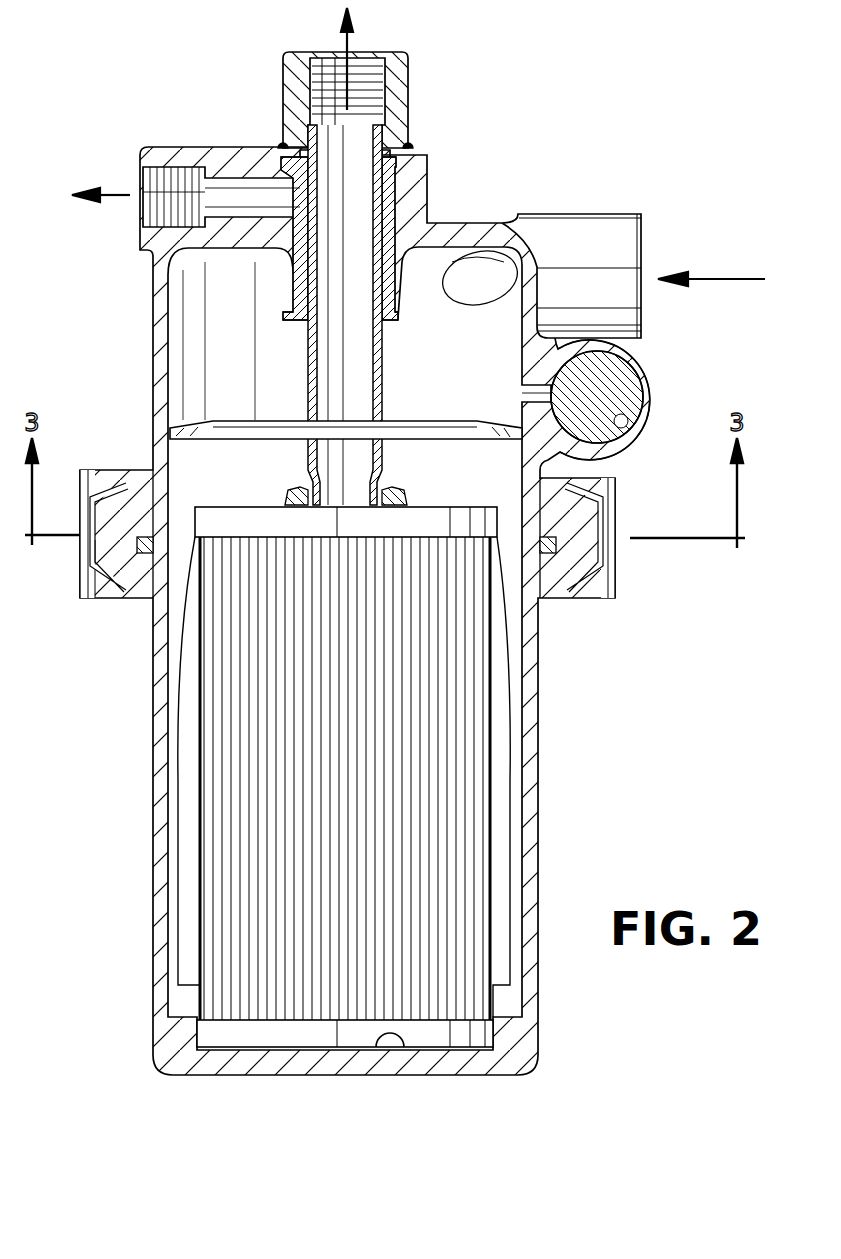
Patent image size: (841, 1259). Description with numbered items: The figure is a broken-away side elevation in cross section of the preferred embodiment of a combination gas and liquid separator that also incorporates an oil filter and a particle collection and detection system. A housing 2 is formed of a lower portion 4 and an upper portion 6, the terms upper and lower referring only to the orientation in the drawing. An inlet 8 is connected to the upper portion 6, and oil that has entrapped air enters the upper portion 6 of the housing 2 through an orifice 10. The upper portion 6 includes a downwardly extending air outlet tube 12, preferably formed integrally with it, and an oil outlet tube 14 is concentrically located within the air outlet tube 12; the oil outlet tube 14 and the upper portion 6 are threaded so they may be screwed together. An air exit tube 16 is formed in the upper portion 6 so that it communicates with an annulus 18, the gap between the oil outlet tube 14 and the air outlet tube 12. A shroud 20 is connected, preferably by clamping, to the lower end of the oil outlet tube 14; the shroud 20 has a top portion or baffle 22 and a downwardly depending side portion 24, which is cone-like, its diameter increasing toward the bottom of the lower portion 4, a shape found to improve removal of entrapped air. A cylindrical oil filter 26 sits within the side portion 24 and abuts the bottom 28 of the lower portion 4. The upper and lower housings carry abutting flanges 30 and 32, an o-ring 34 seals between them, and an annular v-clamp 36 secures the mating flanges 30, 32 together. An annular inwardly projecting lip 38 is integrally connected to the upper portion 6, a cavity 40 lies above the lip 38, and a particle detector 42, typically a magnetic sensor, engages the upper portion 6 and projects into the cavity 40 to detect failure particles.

The housing 2 is at (365, 611).
The lower portion 4 is at (365, 611).
The upper portion 6 is at (153, 383).
The inlet 8 is at (643, 250).
The orifice 10 is at (486, 288).
The air outlet tube 12 is at (400, 292).
The oil outlet tube 14 is at (395, 95).
The air exit tube 16 is at (160, 190).
The annulus 18 is at (300, 300).
The shroud 20 is at (497, 533).
The baffle 22 is at (346, 460).
The side portion 24 is at (510, 733).
The oil filter 26 is at (225, 772).
The bottom 28 is at (398, 1047).
The flange 30 is at (150, 500).
The flange 32 is at (90, 558).
The o-ring 34 is at (143, 555).
The annular v-clamp 36 is at (120, 487).
The lip 38 is at (497, 420).
The cavity 40 is at (622, 428).
The particle detector 42 is at (617, 395).